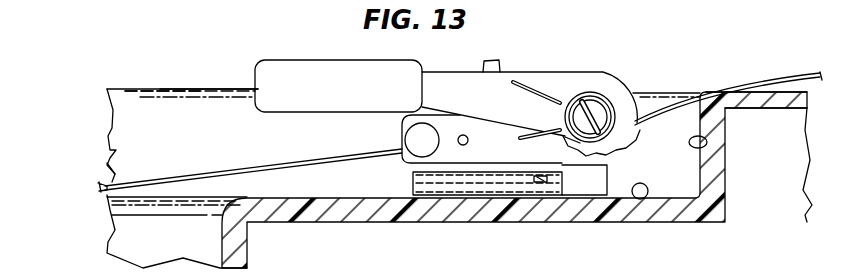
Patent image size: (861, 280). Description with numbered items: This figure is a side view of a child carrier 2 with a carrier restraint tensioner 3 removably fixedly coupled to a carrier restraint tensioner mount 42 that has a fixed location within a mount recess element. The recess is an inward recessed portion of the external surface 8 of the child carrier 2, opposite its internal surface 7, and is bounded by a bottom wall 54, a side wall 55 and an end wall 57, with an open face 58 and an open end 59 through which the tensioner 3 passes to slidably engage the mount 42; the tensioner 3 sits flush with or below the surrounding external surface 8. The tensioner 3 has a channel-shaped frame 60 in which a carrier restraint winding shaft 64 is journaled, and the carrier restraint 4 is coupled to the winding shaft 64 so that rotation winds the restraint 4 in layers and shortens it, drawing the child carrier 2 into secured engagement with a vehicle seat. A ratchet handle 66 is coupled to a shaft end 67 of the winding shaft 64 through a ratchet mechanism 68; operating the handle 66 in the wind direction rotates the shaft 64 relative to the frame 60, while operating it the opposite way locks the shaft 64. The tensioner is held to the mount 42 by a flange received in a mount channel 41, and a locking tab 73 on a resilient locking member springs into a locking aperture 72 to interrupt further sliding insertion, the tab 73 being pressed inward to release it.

The child carrier 2 is at (126, 78).
The carrier restraint tensioner 3 is at (541, 60).
The carrier restraint 4 is at (177, 175).
The internal surface 7 is at (767, 109).
The external surface 8 is at (772, 89).
The mount channel 41 is at (527, 190).
The carrier restraint tensioner mount 42 is at (447, 185).
The bottom wall 54 is at (631, 200).
The side wall 55 is at (183, 125).
The end wall 57 is at (708, 142).
The open face 58 is at (186, 79).
The open end 59 is at (100, 161).
The frame 60 is at (447, 160).
The carrier restraint winding shaft 64 is at (606, 87).
The shaft end 67 is at (607, 95).
The ratchet handle 66 is at (258, 75).
The ratchet mechanism 68 is at (603, 142).
The locking aperture 72 is at (540, 183).
The locking tab 73 is at (545, 183).